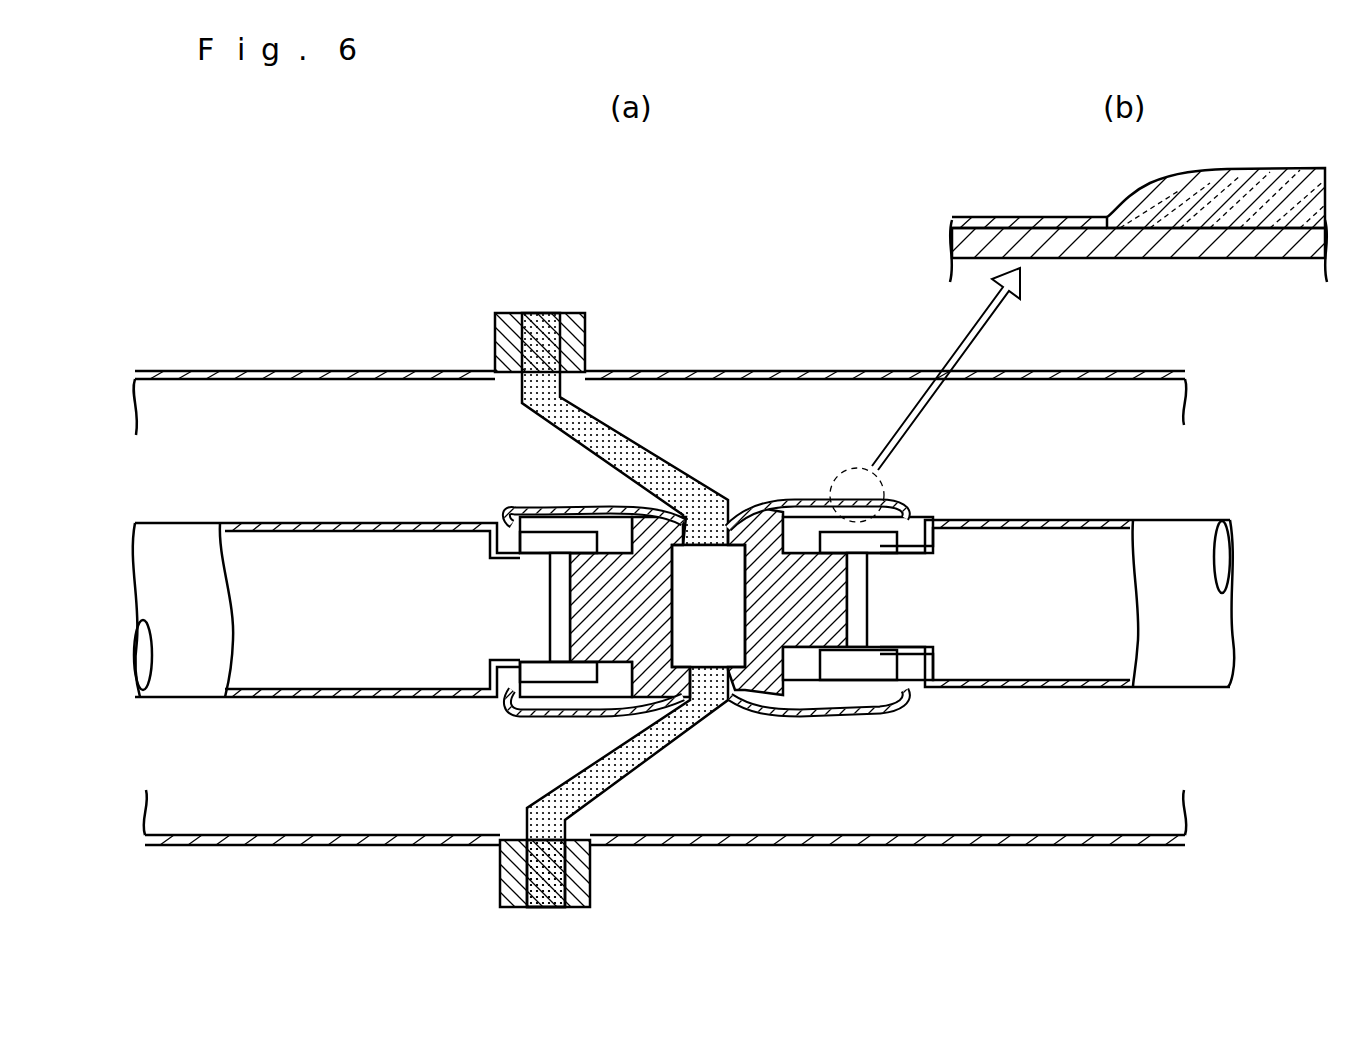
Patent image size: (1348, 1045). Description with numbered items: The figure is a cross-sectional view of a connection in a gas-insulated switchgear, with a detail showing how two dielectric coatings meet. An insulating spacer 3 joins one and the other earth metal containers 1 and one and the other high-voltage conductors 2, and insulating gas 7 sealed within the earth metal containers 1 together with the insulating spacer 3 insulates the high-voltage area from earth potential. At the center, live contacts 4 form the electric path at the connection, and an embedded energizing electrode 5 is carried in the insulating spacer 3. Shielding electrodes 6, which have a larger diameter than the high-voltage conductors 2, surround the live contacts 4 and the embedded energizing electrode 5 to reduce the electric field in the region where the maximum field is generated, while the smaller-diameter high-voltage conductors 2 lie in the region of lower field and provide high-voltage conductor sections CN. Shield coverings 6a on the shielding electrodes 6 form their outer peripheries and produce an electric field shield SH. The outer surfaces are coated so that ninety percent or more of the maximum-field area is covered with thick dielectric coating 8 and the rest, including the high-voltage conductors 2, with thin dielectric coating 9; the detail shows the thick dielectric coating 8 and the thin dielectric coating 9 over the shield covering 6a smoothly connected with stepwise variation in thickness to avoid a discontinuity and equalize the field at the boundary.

The earth metal container 1 is at (316, 371).
The high-voltage conductor 2 is at (370, 577).
The insulating spacer 3 is at (655, 760).
The live contact 4 is at (545, 668).
The embedded energizing electrode 5 is at (708, 650).
The shielding electrode 6 is at (598, 628).
The shield covering 6a is at (898, 700).
The insulating gas 7 is at (333, 788).
The thick dielectric coating 8 is at (745, 503).
The thin dielectric coating 9 is at (308, 523).
The electric field shield SH is at (737, 492).
The high-voltage conductor section CN is at (186, 523).